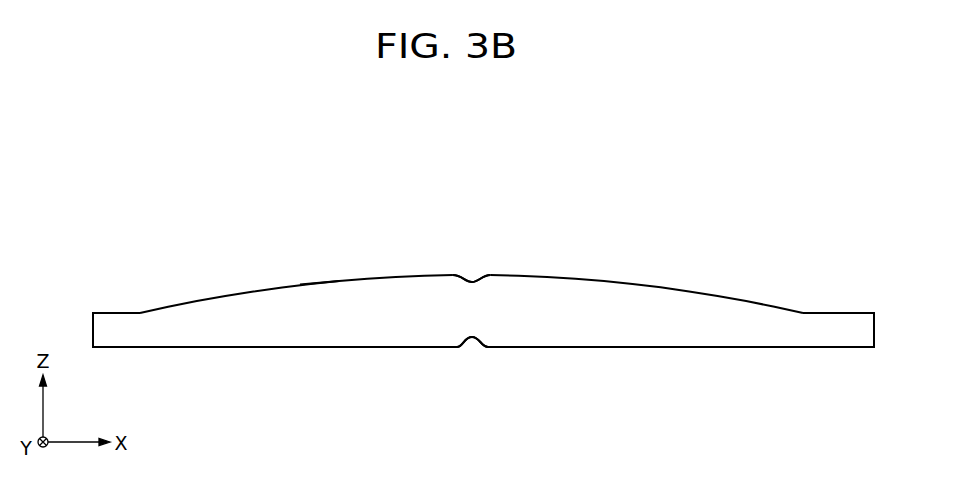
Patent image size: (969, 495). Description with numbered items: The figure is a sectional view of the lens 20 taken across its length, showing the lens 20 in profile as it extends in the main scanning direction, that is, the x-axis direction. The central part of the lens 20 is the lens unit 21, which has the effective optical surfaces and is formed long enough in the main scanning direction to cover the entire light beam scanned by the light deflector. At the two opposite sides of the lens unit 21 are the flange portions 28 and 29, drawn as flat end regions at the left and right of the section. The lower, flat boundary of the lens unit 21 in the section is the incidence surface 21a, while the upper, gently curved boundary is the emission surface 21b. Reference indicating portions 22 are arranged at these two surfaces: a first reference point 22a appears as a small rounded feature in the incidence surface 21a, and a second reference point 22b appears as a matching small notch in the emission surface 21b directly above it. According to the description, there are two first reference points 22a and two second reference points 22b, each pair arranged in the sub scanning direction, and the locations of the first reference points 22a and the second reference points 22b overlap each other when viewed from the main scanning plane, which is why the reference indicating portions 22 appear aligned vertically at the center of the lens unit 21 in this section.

The lens 20 is at (688, 240).
The lens unit 21 is at (240, 222).
The incidence surface 21a is at (272, 348).
The emission surface 21b is at (267, 287).
The reference indicating portions 22 is at (512, 242).
The first reference points 22a is at (472, 338).
The second reference points 22b is at (473, 282).
The flange portion 28 is at (113, 312).
The flange portion 29 is at (843, 312).